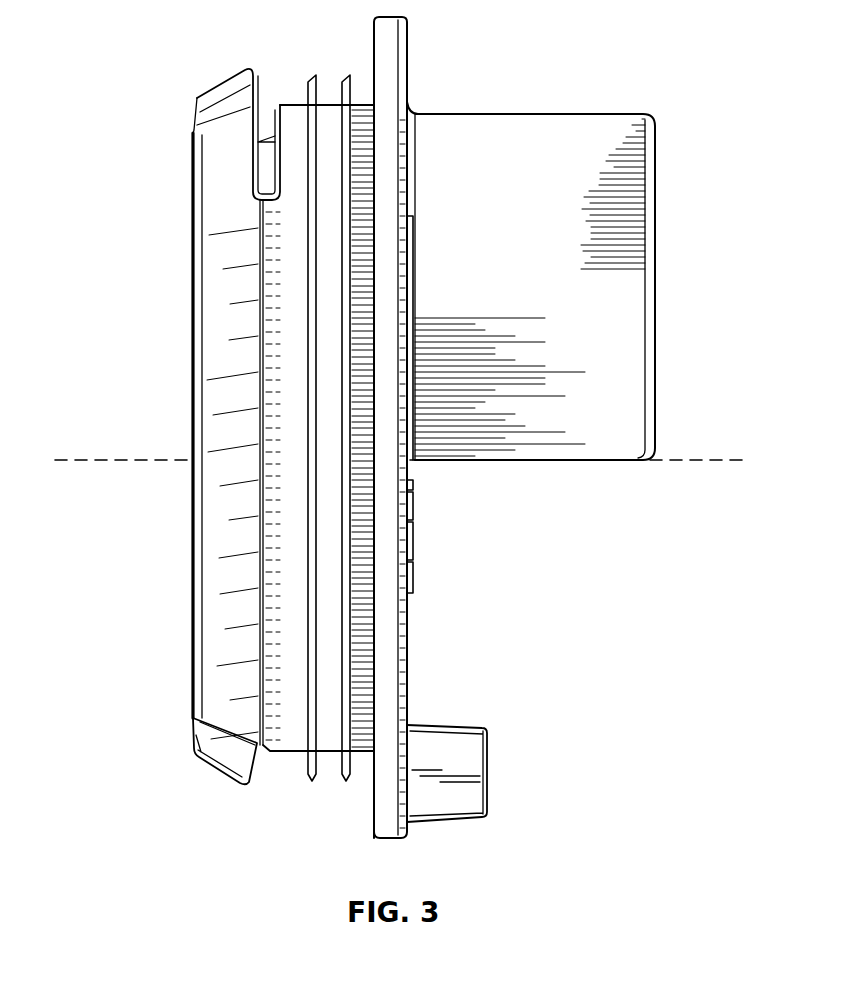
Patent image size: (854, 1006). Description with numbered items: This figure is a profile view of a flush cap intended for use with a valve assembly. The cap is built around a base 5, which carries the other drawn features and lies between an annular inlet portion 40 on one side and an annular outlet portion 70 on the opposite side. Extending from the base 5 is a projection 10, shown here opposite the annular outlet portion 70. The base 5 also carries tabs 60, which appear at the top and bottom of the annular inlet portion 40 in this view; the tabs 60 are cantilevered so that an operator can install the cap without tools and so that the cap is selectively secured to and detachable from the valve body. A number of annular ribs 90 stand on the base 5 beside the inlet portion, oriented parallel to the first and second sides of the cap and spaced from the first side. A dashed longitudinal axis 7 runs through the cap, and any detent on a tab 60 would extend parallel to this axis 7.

The base 5 is at (407, 635).
The longitudinal axis 7 is at (130, 460).
The projection 10 is at (490, 772).
The annular inlet portion 40 is at (193, 580).
The tabs 60 is at (226, 87).
The annular outlet portion 70 is at (648, 178).
The annular ribs 90 is at (308, 769).